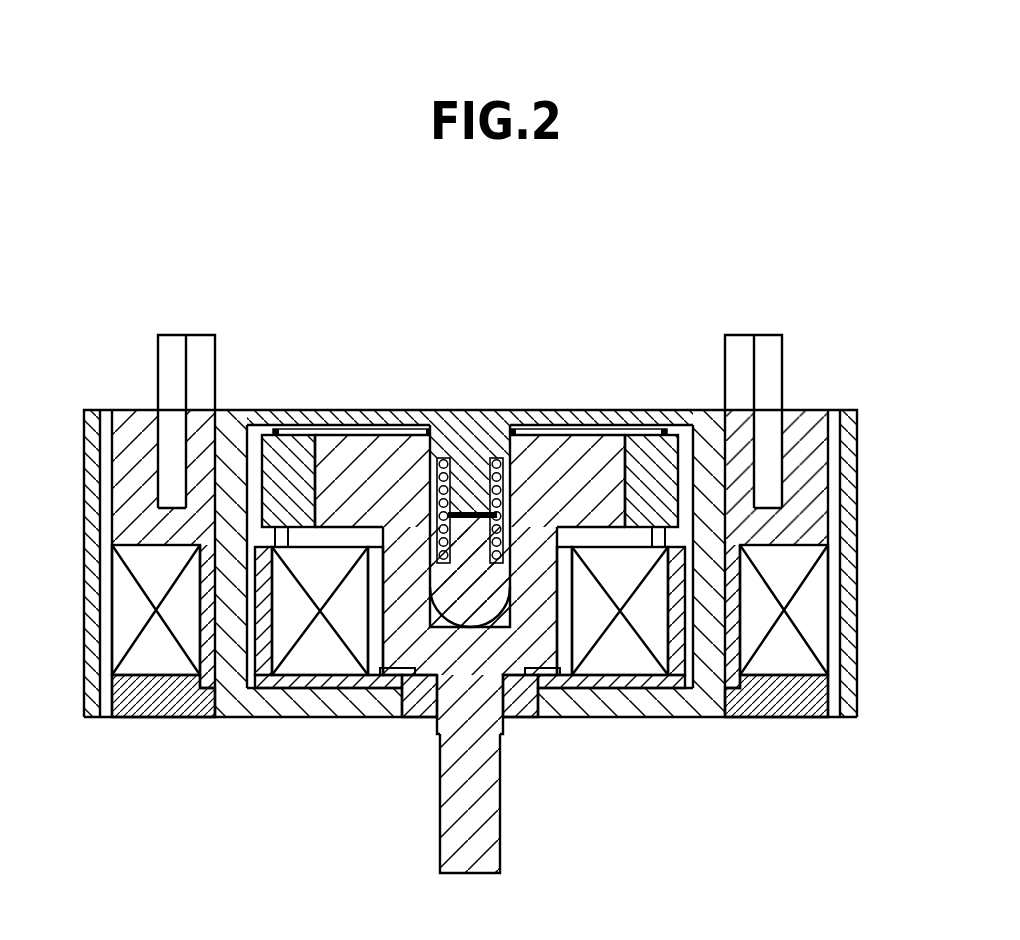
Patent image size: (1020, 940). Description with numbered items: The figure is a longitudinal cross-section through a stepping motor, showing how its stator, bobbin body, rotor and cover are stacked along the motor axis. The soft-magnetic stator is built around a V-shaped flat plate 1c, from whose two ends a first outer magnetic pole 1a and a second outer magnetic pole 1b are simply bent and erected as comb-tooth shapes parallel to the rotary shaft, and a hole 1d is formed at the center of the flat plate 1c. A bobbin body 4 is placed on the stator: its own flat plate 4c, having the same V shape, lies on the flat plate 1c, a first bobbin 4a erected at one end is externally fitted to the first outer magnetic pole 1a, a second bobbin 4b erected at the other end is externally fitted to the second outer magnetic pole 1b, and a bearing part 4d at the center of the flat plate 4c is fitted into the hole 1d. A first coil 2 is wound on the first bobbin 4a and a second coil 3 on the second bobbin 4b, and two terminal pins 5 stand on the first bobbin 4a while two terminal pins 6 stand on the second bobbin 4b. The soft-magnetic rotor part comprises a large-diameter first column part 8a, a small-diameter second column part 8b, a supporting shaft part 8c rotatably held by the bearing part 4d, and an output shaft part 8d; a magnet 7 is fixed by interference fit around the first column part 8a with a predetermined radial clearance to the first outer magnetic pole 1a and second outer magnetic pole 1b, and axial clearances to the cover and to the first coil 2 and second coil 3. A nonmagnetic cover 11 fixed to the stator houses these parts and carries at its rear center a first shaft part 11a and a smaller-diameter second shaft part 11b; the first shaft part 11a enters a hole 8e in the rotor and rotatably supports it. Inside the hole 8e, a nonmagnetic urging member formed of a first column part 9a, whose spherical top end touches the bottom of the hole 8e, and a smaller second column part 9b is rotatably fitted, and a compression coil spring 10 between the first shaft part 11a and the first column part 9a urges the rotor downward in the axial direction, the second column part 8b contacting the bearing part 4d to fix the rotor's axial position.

The first outer magnetic pole 1a is at (233, 427).
The second outer magnetic pole 1b is at (705, 443).
The flat plate 1c is at (590, 708).
The hole 1d is at (390, 690).
The first coil 2 is at (148, 662).
The second coil 3 is at (783, 662).
The bobbin body 4 is at (207, 598).
The first bobbin 4a is at (133, 427).
The second bobbin 4b is at (812, 422).
The flat plate 4c is at (352, 680).
The bearing part 4d is at (423, 703).
The terminal pins 5 is at (163, 368).
The terminal pins 6 is at (773, 385).
The magnet 7 is at (648, 457).
The first column part 8a is at (386, 447).
The second column part 8b is at (397, 597).
The supporting shaft part 8c is at (490, 723).
The output shaft part 8d is at (473, 853).
The hole 8e is at (427, 500).
The first column part 9a is at (492, 602).
The second column part 9b is at (503, 553).
The compression coil spring 10 is at (508, 498).
The cover 11 is at (293, 428).
The first shaft part 11a is at (470, 495).
The second shaft part 11b is at (470, 495).